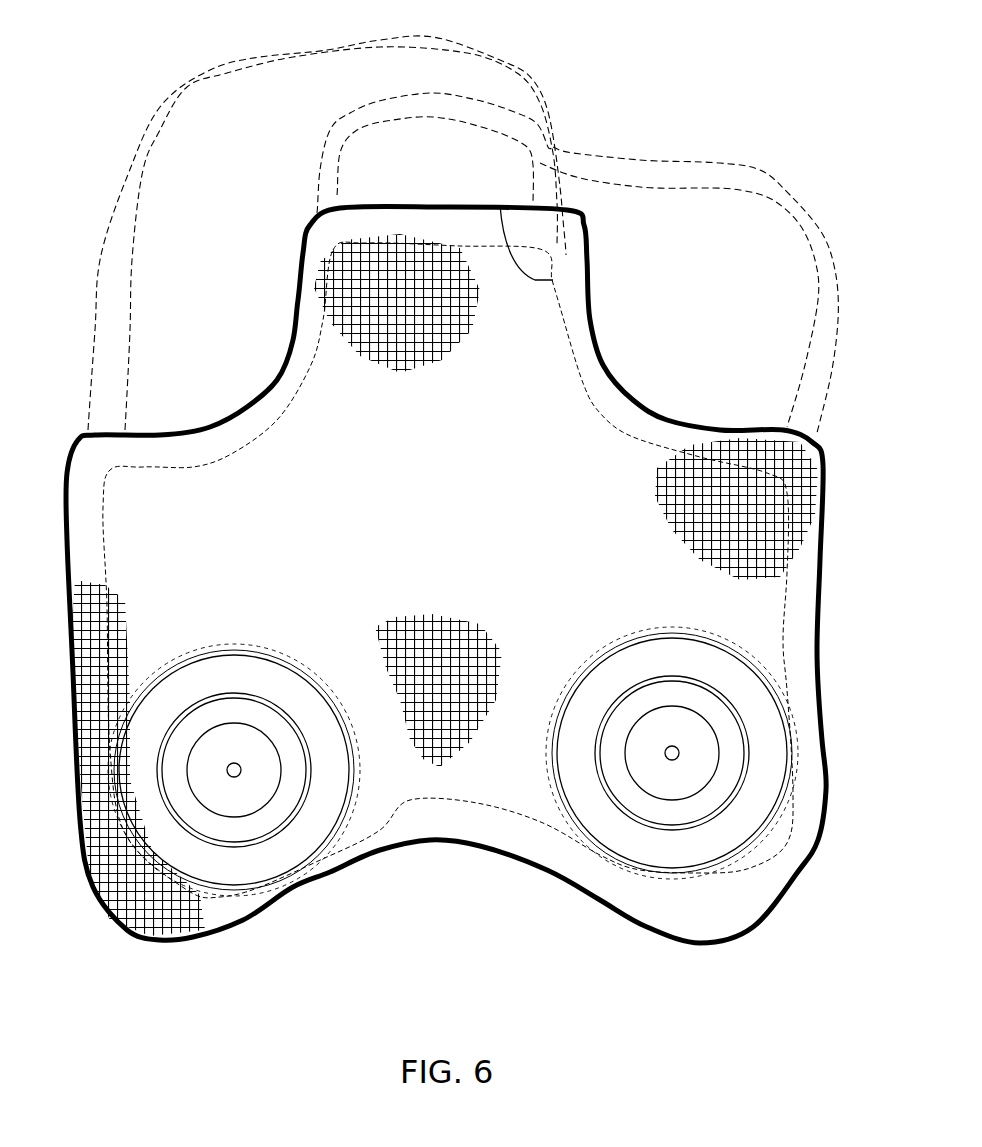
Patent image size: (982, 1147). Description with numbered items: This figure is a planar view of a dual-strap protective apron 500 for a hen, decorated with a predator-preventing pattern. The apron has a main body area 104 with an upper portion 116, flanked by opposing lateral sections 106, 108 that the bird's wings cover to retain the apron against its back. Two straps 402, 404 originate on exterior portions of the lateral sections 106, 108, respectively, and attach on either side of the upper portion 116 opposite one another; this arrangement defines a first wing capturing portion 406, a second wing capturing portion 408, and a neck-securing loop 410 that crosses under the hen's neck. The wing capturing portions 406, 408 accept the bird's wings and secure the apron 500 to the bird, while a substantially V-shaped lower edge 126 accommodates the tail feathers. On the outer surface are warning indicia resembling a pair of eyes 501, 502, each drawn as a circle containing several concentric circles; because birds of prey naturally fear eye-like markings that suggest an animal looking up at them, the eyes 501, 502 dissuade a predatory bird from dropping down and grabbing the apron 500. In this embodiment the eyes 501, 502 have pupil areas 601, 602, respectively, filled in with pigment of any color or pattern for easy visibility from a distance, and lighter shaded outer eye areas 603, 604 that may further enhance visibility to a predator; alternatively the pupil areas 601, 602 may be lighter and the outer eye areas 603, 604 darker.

The apron 500 is at (553, 87).
The strap 402 is at (170, 117).
The strap 404 is at (723, 163).
The neck-securing loop 410 is at (457, 180).
The first wing capturing portion 406 is at (220, 336).
The second wing capturing portion 408 is at (723, 336).
The upper portion 116 is at (553, 280).
The main body area 104 is at (456, 425).
The lateral section 106 is at (251, 607).
The lateral section 108 is at (700, 607).
The eye 501 is at (290, 640).
The eye 502 is at (590, 640).
The lower edge 126 is at (500, 843).
The pupil area 601 is at (263, 787).
The pupil area 602 is at (640, 757).
The outer eye area 603 is at (187, 857).
The outer eye area 604 is at (733, 820).